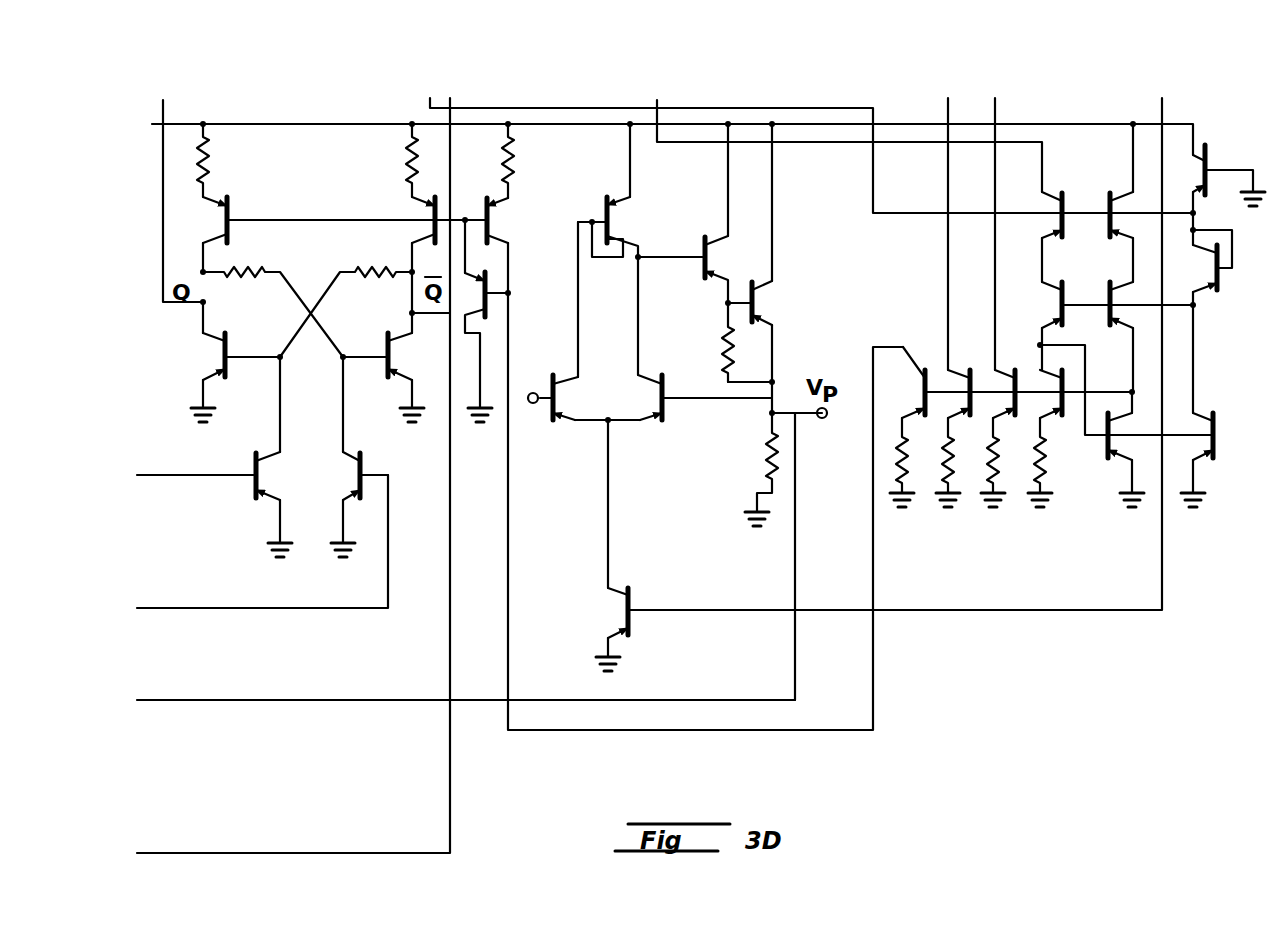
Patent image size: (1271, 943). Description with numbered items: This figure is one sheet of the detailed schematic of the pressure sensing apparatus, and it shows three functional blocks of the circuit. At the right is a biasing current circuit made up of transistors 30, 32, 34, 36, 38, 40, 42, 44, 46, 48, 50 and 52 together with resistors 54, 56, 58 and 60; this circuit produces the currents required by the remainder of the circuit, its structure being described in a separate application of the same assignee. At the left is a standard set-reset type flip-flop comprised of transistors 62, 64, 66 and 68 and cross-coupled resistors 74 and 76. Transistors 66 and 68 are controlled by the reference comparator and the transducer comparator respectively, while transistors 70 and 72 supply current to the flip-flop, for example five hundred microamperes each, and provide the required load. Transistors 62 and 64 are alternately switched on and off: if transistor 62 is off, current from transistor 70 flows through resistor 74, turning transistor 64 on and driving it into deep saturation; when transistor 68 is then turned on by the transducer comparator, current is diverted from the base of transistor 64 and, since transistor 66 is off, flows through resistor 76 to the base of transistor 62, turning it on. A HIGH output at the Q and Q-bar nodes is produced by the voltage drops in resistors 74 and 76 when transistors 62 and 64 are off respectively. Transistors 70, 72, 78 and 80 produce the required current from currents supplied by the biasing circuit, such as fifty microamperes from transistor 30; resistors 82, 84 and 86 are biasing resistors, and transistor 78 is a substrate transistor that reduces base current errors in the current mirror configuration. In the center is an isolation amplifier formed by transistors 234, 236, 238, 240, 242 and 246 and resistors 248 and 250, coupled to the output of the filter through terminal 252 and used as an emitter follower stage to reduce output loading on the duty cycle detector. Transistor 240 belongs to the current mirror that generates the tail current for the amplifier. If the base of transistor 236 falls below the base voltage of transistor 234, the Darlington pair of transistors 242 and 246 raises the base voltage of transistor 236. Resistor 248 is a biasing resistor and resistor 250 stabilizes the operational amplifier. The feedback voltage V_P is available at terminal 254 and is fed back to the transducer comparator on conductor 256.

The transistor 30 is at (916, 392).
The transistor 32 is at (957, 374).
The transistor 34 is at (1002, 374).
The transistor 36 is at (1042, 202).
The transistor 38 is at (1042, 296).
The transistor 40 is at (1048, 374).
The transistor 42 is at (1212, 152).
The transistor 44 is at (1205, 300).
The transistor 46 is at (1100, 296).
The transistor 48 is at (1098, 454).
The transistor 50 is at (1100, 205).
The transistor 52 is at (1200, 468).
The resistor 54 is at (926, 446).
The resistor 56 is at (972, 446).
The resistor 58 is at (1017, 446).
The resistor 60 is at (1062, 446).
The transistor 62 is at (201, 362).
The transistor 64 is at (396, 380).
The transistor 66 is at (245, 492).
The transistor 68 is at (368, 490).
The transistor 70 is at (222, 192).
The transistor 72 is at (408, 206).
The resistor 74 is at (232, 264).
The resistor 76 is at (387, 262).
The substrate transistor 78 is at (498, 300).
The transistor 80 is at (505, 222).
The biasing resistor 82 is at (212, 170).
The biasing resistor 84 is at (406, 157).
The biasing resistor 86 is at (518, 168).
The transistor 234 is at (540, 422).
The transistor 236 is at (686, 432).
The transistor 238 is at (618, 216).
The transistor 240 is at (633, 584).
The transistor 242 is at (702, 290).
The transistor 246 is at (768, 300).
The biasing resistor 248 is at (718, 336).
The resistor 250 is at (760, 459).
The terminal 252 is at (529, 388).
The terminal 254 is at (817, 418).
The conductor 256 is at (660, 700).